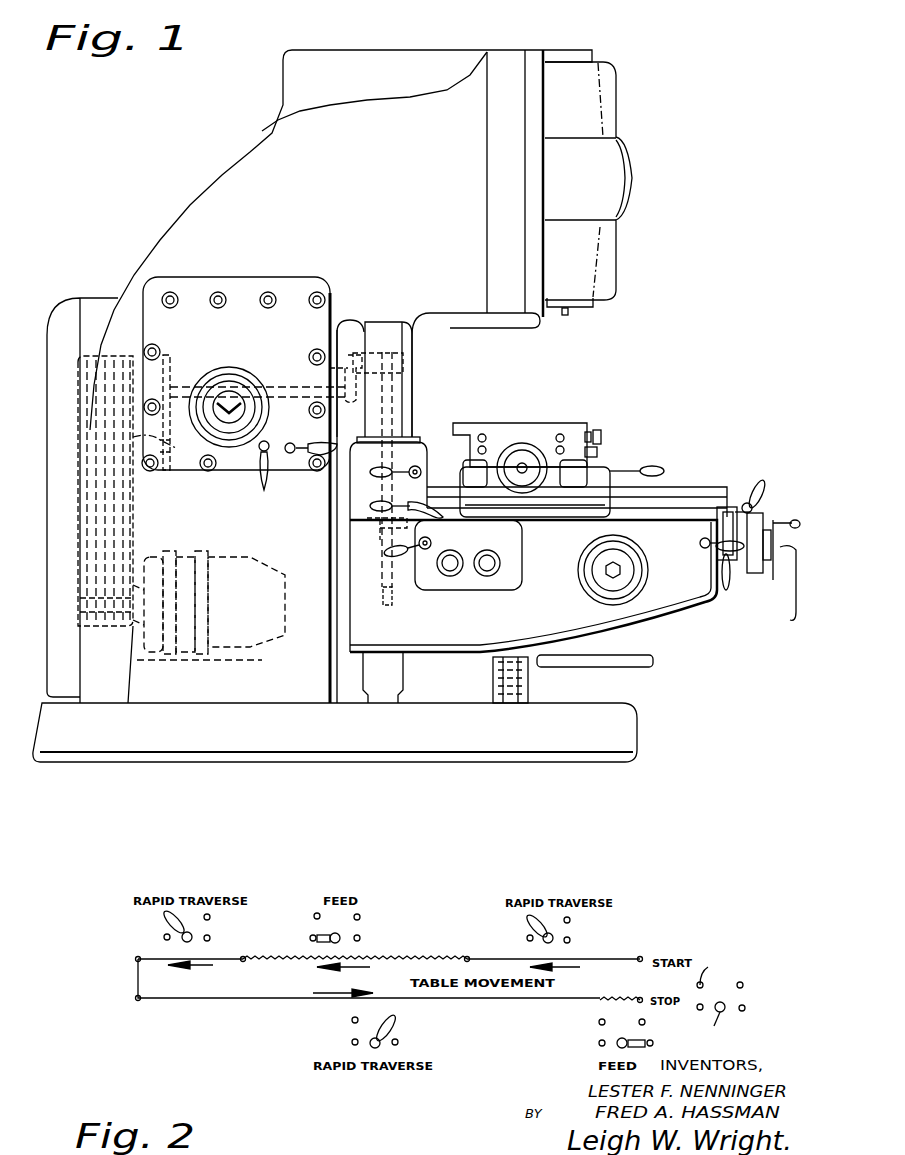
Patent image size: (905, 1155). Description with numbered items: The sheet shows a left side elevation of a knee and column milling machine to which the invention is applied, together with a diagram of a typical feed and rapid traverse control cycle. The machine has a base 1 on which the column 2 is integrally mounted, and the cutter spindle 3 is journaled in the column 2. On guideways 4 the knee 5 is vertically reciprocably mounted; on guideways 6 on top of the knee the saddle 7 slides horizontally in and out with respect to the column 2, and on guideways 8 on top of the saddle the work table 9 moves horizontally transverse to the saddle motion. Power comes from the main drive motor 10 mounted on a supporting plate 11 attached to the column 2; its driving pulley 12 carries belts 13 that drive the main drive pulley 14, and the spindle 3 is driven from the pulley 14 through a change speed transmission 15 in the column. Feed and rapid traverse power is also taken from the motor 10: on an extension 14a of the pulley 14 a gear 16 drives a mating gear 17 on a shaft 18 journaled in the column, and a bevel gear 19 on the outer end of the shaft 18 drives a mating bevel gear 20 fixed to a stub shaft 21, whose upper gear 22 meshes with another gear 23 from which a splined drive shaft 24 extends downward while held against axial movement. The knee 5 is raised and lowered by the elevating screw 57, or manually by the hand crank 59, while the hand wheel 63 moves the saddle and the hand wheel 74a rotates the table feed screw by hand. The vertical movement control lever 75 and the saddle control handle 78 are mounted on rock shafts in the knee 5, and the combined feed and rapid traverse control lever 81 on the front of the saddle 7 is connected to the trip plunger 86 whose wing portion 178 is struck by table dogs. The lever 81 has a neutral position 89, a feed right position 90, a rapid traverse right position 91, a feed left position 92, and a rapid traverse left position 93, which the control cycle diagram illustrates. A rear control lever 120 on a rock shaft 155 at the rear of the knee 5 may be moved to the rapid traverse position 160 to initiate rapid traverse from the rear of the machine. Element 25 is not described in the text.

In FIG. 1, the base 1 is at (270, 745).
In FIG. 1, the column 2 is at (193, 182).
In FIG. 1, the cutter spindle 3 is at (577, 310).
In FIG. 1, the guideways 4 is at (400, 412).
In FIG. 1, the knee 5 is at (547, 572).
In FIG. 1, the guideways 6 is at (692, 500).
In FIG. 1, the saddle 7 is at (570, 507).
In FIG. 1, the guideways 8 is at (525, 473).
In FIG. 1, the work table 9 is at (568, 427).
In FIG. 1, the main drive motor 10 is at (258, 567).
In FIG. 1, the supporting plate 11 is at (262, 660).
In FIG. 1, the driving pulley 12 is at (82, 600).
In FIG. 1, the belts 13 is at (87, 543).
In FIG. 1, the main drive pulley 14 is at (77, 375).
In FIG. 1, the extension of the pulley 14a is at (173, 447).
In FIG. 1, the change speed transmission 15 is at (240, 315).
In FIG. 1, the gear 16 is at (168, 470).
In FIG. 1, the mating gear 17 is at (169, 357).
In FIG. 1, the shaft 18 is at (299, 387).
In FIG. 1, the bevel gear 19 is at (311, 451).
In FIG. 1, the mating bevel gear 20 is at (377, 367).
In FIG. 1, the stub shaft 21 is at (356, 368).
In FIG. 1, the gear 22 is at (357, 362).
In FIG. 1, the gear 23 is at (378, 352).
In FIG. 1, the splined drive shaft 24 is at (403, 382).
In FIG. 1, the bracket 25 is at (366, 528).
In FIG. 1, the elevating screw 57 is at (530, 682).
In FIG. 1, the hand crank 59 is at (795, 612).
In FIG. 1, the hand wheel 63 is at (770, 582).
In FIG. 1, the hand wheel 74a is at (525, 441).
In FIG. 1, the vertical movement control lever 75 is at (746, 568).
In FIG. 1, the saddle control handle 78 is at (749, 497).
In FIG. 1, the combined feed and rapid traverse control lever 81 is at (642, 461).
In FIG. 1, the trip plunger 86 is at (603, 436).
In FIG. 2, the neutral or inoperative position 89 is at (715, 1023).
In FIG. 2, the feed right position 90 is at (211, 938).
In FIG. 2, the rapid traverse right position 91 is at (211, 917).
In FIG. 2, the feed left position 92 is at (164, 937).
In FIG. 2, the rapid traverse left position 93 is at (162, 917).
In FIG. 1, the rear control lever 120 is at (378, 500).
In FIG. 1, the rock shaft 155 is at (418, 467).
In FIG. 1, the rapid traverse position 160 is at (378, 470).
In FIG. 1, the wing portion 178 is at (602, 450).